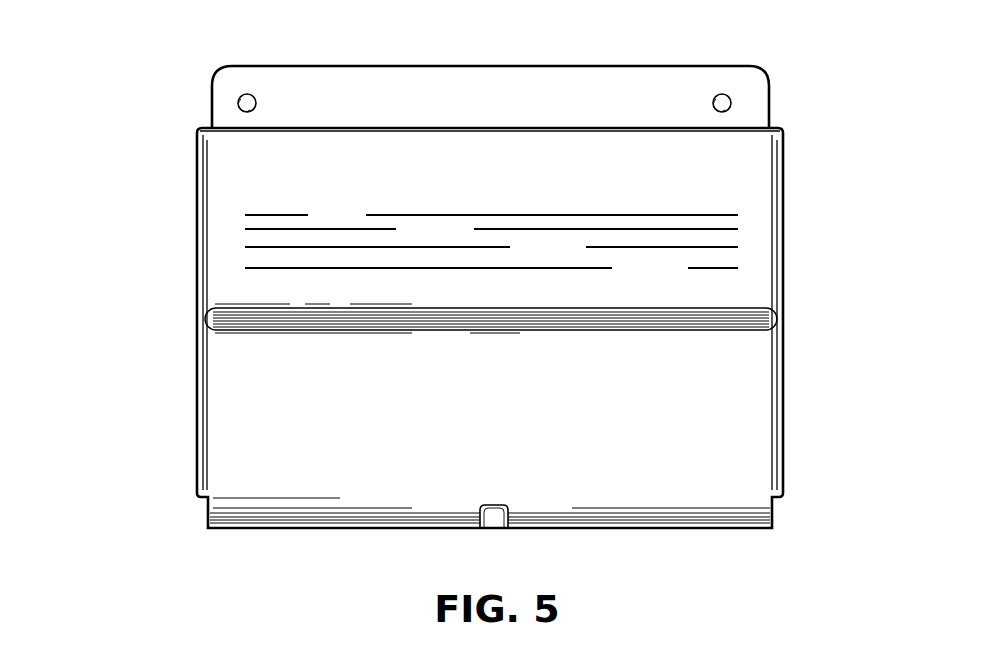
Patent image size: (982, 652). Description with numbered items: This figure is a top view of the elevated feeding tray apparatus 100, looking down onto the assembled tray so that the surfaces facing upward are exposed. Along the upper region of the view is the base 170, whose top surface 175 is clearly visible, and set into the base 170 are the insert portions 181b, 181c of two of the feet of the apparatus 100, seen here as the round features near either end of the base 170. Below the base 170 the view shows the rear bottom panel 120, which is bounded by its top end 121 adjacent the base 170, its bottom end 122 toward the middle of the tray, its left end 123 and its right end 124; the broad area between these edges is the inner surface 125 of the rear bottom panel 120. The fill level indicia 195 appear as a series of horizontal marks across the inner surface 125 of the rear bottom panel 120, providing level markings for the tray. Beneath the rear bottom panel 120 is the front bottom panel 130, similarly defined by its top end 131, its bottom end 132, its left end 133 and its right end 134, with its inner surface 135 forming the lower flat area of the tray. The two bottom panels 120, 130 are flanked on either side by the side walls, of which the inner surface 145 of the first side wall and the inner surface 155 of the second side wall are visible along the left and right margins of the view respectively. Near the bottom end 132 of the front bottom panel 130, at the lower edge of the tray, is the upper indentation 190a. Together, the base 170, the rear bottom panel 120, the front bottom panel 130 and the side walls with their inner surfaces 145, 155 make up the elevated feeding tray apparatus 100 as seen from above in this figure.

The elevated feeding tray apparatus 100 is at (140, 487).
The rear bottom panel 120 is at (753, 282).
The top end 121 is at (482, 147).
The bottom end 122 is at (501, 300).
The left end 123 is at (222, 222).
The right end 124 is at (758, 215).
The inner surface 125 is at (425, 178).
The front bottom panel 130 is at (733, 477).
The top end 131 is at (478, 493).
The bottom end 132 is at (500, 345).
The left end 133 is at (217, 418).
The right end 134 is at (753, 412).
The inner surface 135 is at (414, 385).
The inner surface 145 is at (222, 293).
The inner surface 155 is at (755, 392).
The base 170 is at (742, 88).
The top surface 175 is at (599, 99).
The insert portion 181b is at (237, 103).
The insert portion 181c is at (735, 100).
The upper indentation 190a is at (494, 520).
The fill level indicia 195 is at (672, 215).